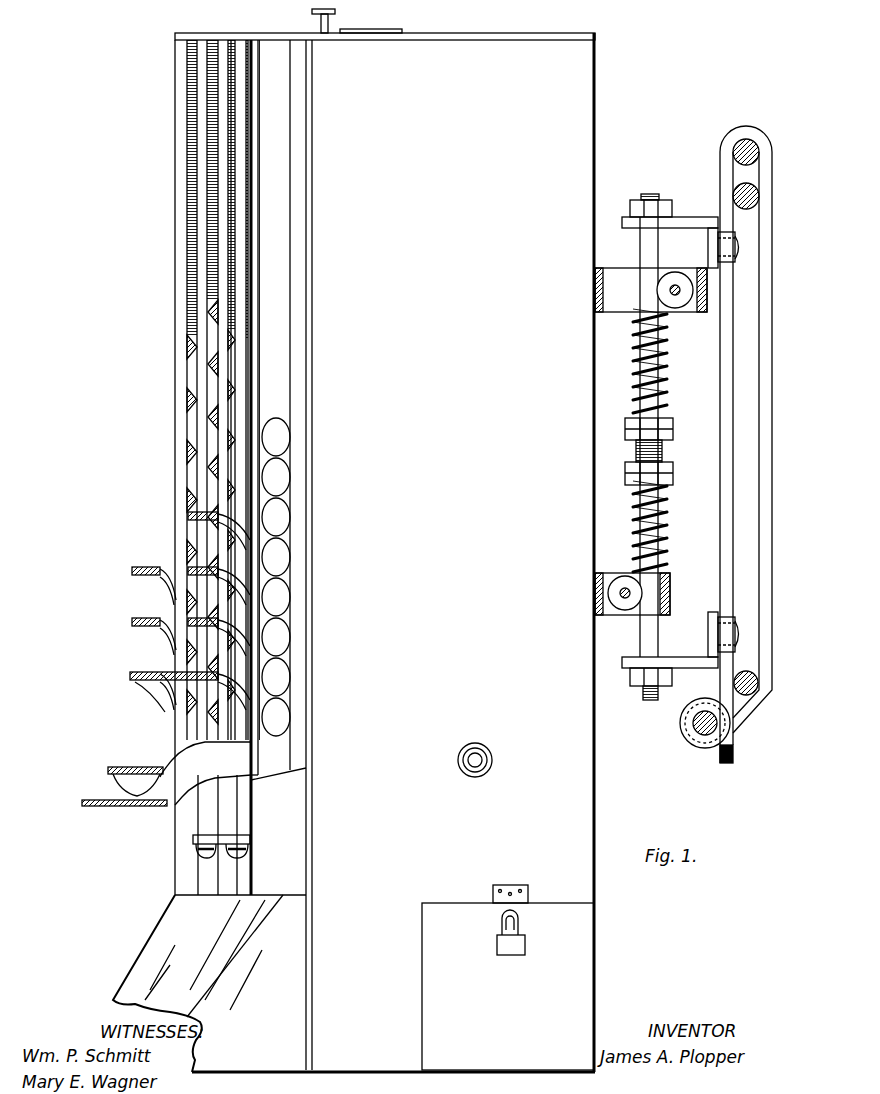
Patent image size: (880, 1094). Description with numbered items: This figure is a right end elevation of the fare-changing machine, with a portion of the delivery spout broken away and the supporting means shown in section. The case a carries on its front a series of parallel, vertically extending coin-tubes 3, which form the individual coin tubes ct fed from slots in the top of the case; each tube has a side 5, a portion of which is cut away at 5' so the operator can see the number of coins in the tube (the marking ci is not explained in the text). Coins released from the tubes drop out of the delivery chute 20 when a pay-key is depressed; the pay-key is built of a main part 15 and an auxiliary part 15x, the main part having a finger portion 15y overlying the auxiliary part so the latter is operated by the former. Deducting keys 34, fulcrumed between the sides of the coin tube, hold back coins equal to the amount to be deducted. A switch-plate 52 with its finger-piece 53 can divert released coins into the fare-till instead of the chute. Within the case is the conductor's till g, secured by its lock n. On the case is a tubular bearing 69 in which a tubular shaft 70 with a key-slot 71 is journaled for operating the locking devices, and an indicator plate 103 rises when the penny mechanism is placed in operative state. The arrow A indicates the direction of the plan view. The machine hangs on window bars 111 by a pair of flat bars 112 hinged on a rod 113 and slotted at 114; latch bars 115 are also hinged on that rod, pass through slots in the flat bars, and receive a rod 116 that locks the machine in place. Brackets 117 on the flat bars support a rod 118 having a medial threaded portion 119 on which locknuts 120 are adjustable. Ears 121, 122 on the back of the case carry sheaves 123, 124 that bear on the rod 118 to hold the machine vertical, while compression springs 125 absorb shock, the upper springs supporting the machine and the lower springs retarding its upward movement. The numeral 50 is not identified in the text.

The coin-tubes 3 is at (190, 151).
The side of coin tube 5 is at (177, 813).
The cut-away portion of plate 5' is at (307, 587).
The pay-key main part 15 is at (170, 757).
The pay-key auxiliary part 15x is at (120, 813).
The finger portion 15y is at (125, 784).
The delivery chute 20 is at (192, 939).
The deducting keys 34 is at (218, 521).
The knob 50 is at (338, 12).
The switch-plate 52 is at (283, 850).
The finger-piece 53 is at (212, 856).
The tubular bearing 69 is at (482, 746).
The tubular shaft 70 is at (486, 760).
The key-slot 71 is at (475, 753).
The indicator plate 103 is at (386, 31).
The window bars 111 is at (757, 198).
The flat bars 112 is at (722, 400).
The rod 113 is at (736, 152).
The slot 114 is at (733, 748).
The latch bars 115 is at (763, 400).
The rod 116 is at (694, 730).
The brackets 117 is at (688, 217).
The rod 118 is at (650, 196).
The threaded portion 119 is at (664, 452).
The locknuts 120 is at (673, 427).
The ear 121 is at (692, 272).
The ear 122 is at (671, 609).
The sheave 123 is at (676, 302).
The sheave 124 is at (631, 593).
The compression springs 125 is at (668, 355).
The case a is at (428, 478).
The coin tubes ct is at (218, 402).
The coin tube ci is at (235, 348).
The arrow A is at (95, 415).
The lock n is at (527, 945).
The conductor's till g is at (580, 983).